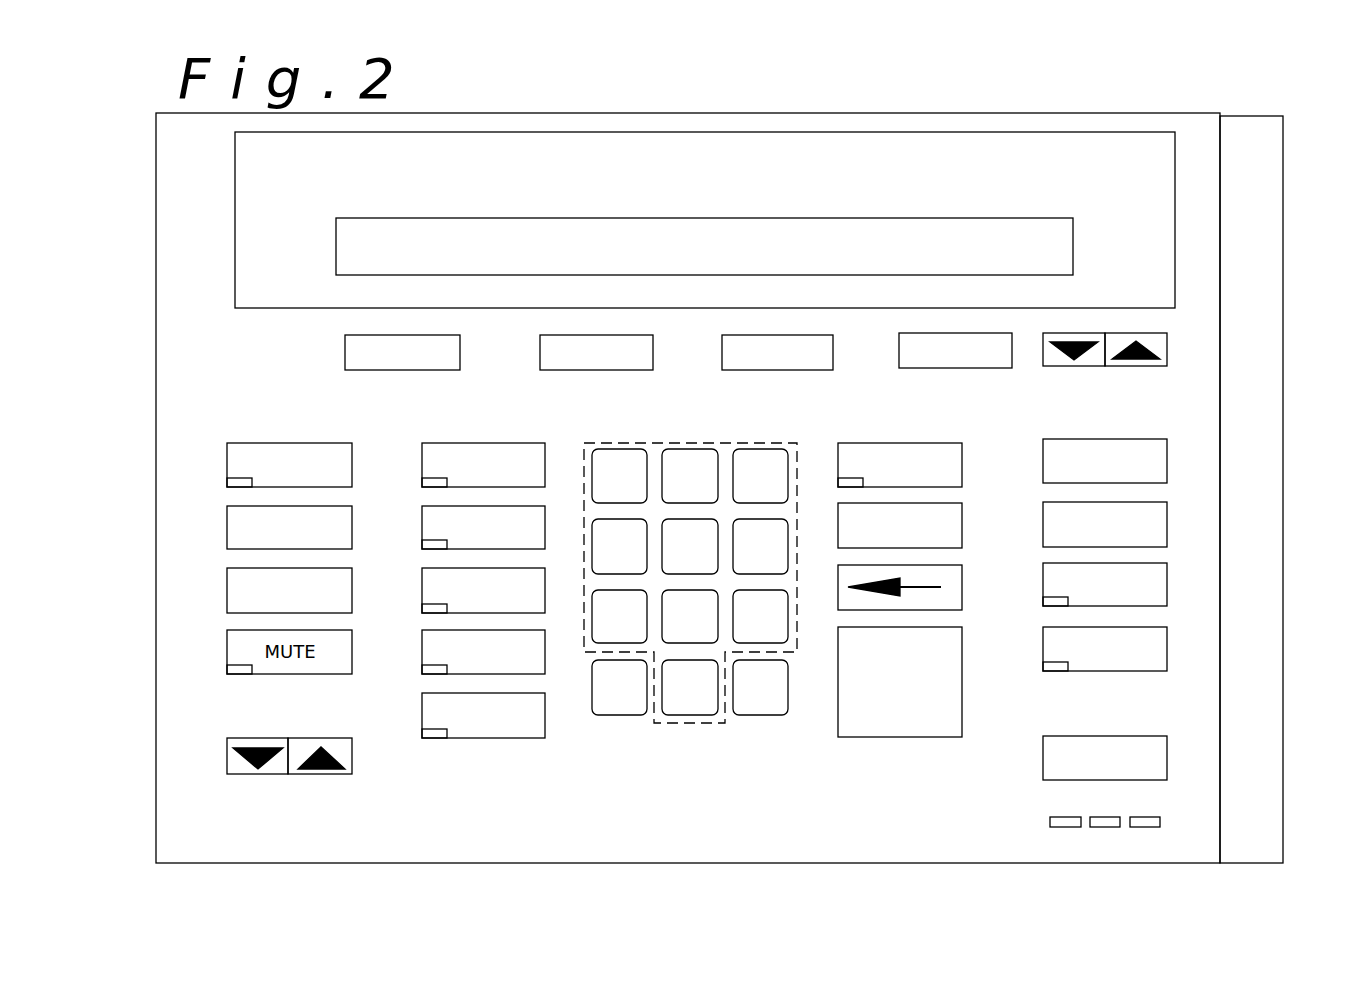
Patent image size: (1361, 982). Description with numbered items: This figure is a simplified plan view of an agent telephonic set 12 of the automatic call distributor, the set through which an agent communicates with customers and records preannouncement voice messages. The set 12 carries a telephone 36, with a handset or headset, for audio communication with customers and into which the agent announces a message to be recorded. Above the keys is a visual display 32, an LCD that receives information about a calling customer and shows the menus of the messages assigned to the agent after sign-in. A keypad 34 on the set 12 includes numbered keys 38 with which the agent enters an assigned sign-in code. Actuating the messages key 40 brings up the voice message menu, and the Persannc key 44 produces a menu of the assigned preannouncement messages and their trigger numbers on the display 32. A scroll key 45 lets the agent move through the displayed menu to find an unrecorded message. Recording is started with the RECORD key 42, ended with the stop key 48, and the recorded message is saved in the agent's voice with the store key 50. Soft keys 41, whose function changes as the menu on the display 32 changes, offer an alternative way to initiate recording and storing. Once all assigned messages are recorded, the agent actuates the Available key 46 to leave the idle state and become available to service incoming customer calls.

The agent telephonic set 12 is at (933, 103).
The visual display 32 is at (1056, 259).
The keypad 34 is at (1140, 420).
The telephone 36 is at (1265, 475).
The numbered keys 38 is at (672, 440).
The messages key 40 is at (434, 447).
The soft keys 41 is at (445, 357).
The RECORD key 42 is at (230, 461).
The Persannc key 44 is at (880, 440).
The scroll key 45 is at (1148, 337).
The Available key 46 is at (1140, 602).
The stop key 48 is at (230, 521).
The store key 50 is at (228, 602).